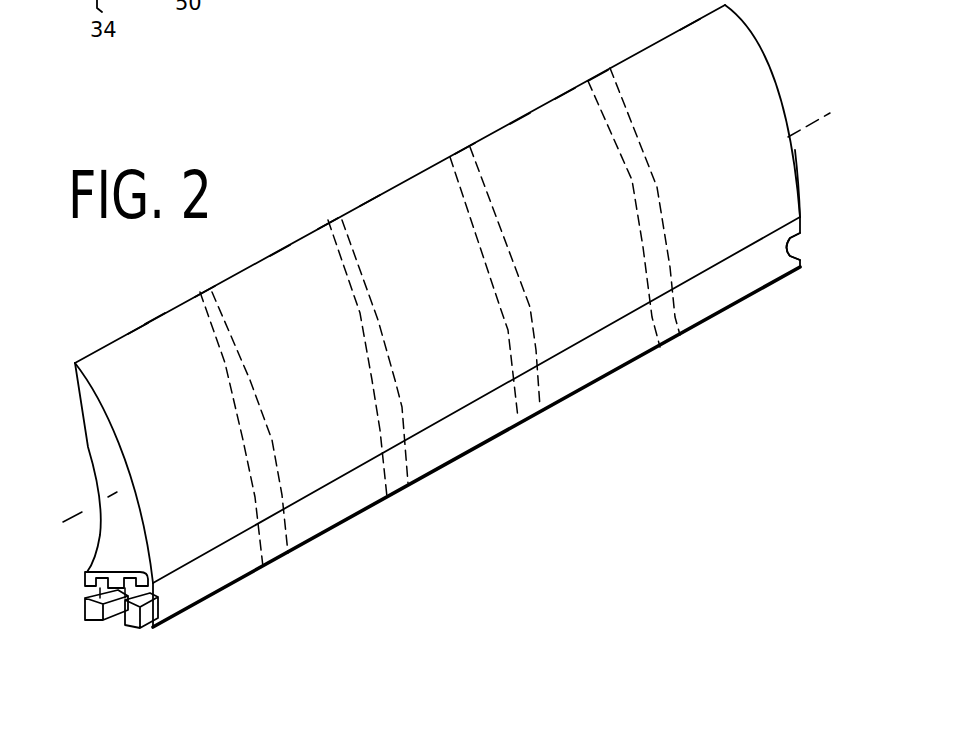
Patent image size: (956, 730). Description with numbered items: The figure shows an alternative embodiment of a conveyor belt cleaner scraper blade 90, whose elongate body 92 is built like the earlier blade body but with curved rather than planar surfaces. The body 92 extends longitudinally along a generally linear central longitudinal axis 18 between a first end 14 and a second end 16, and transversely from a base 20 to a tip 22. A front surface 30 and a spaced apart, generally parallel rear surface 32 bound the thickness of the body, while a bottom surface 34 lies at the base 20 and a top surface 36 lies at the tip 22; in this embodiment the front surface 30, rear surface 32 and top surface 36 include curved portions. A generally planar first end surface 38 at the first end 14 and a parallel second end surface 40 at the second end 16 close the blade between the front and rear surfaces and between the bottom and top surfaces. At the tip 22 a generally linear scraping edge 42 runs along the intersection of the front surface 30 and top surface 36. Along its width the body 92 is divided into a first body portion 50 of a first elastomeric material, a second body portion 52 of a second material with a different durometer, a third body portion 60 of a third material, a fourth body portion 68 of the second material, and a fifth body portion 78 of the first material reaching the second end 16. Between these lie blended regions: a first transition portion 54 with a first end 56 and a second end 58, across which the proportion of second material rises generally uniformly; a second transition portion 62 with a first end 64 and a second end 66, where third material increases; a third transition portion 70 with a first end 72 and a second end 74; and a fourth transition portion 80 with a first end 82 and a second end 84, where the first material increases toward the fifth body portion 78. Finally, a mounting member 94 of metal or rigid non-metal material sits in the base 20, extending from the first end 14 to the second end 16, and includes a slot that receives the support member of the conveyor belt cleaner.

The first end 14 is at (112, 473).
The second end 16 is at (781, 100).
The central longitudinal axis 18 is at (80, 518).
The base 20 is at (460, 443).
The tip 22 is at (402, 198).
The front surface 30 is at (527, 143).
The rear surface 32 is at (90, 540).
The bottom surface 34 is at (92, 620).
The top surface 36 is at (84, 400).
The first end surface 38 is at (127, 521).
The second end surface 40 is at (795, 173).
The scraping edge 42 is at (157, 320).
The first body portion 50 is at (138, 350).
The second body portion 52 is at (278, 267).
The first transition portion 54 is at (202, 300).
The first end of first transition portion 56 is at (236, 407).
The second end of first transition portion 58 is at (264, 392).
The third body portion 60 is at (371, 218).
The second transition portion 62 is at (328, 227).
The first end of second transition portion 64 is at (375, 404).
The second end of second transition portion 66 is at (402, 397).
The fourth body portion 68 is at (568, 110).
The third transition portion 70 is at (460, 153).
The first end of third transition portion 72 is at (504, 318).
The second end of third transition portion 74 is at (530, 296).
The fifth body portion 78 is at (687, 45).
The fourth transition portion 80 is at (598, 80).
The first end of fourth transition portion 82 is at (640, 227).
The second end of fourth transition portion 84 is at (666, 192).
The scraper blade 90 is at (598, 503).
The body 92 is at (742, 61).
The mounting member 94 is at (112, 627).